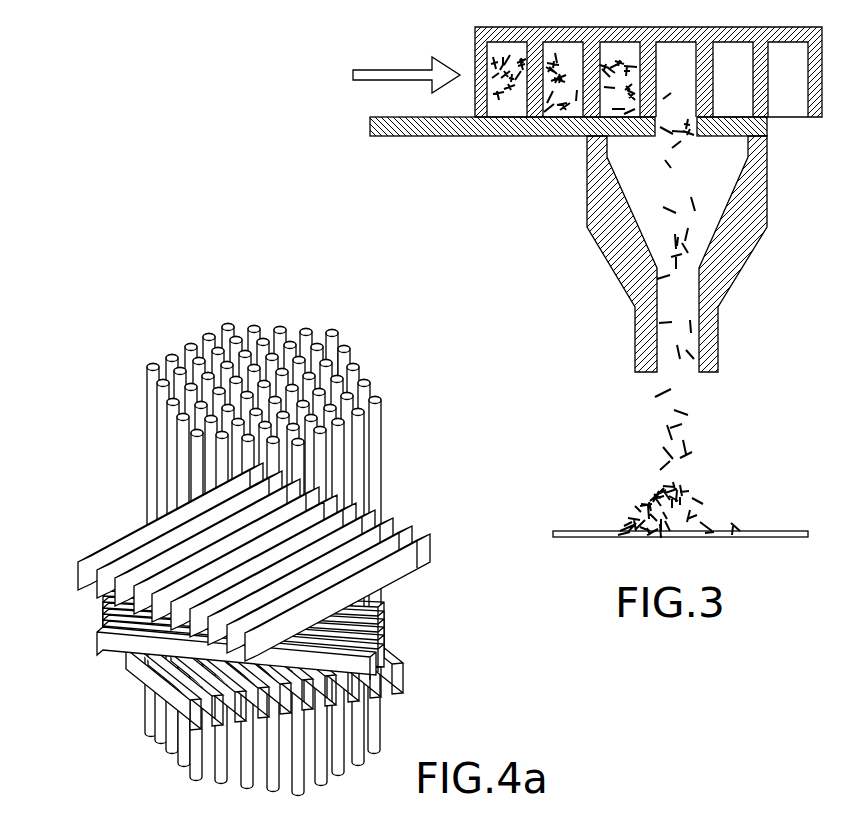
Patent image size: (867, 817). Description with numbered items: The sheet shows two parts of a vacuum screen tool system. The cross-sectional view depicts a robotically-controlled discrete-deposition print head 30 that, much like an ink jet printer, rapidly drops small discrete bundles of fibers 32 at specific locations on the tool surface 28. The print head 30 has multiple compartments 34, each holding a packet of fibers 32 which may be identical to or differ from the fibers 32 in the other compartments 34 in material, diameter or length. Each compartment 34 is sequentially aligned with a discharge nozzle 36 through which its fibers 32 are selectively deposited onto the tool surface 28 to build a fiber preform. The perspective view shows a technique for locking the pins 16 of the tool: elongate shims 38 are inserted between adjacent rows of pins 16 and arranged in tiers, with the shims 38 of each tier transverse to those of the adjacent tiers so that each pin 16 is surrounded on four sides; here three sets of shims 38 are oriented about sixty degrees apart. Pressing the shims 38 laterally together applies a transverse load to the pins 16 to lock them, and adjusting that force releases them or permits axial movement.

In FIG. 4a, the pins 16 is at (332, 333).
In FIG. 3, the tool surface 28 is at (767, 530).
In FIG. 3, the discrete-deposition print head 30 is at (609, 254).
In FIG. 3, the fibers 32 is at (560, 110).
In FIG. 3, the compartments 34 is at (737, 102).
In FIG. 3, the discharge nozzle 36 is at (728, 278).
In FIG. 4a, the elongate shims 38 is at (153, 677).